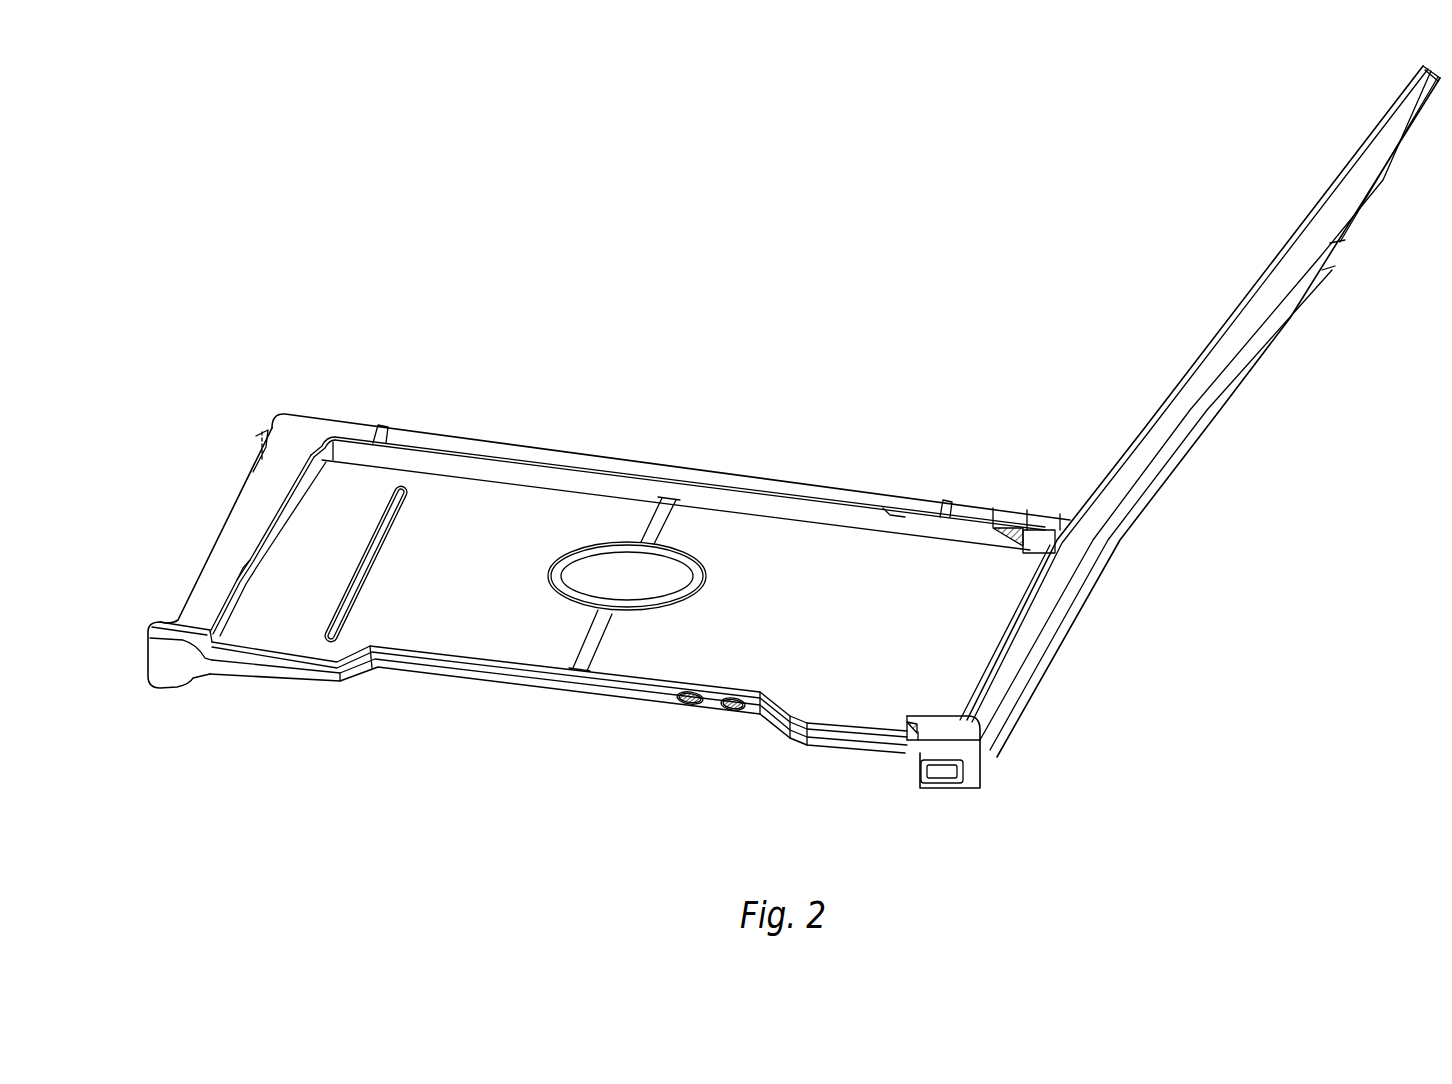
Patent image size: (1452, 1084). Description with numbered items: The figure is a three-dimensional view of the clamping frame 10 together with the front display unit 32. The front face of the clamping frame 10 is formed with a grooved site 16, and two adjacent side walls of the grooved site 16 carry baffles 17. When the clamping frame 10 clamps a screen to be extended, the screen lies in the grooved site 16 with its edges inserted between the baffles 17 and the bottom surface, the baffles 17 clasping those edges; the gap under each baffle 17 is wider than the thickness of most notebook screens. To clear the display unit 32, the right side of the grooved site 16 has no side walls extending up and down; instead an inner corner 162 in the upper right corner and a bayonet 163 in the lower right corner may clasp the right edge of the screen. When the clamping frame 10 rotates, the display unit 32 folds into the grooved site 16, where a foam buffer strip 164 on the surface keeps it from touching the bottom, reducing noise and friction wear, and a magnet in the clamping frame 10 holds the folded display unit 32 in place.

The clamping frame 10 is at (599, 586).
The grooved site 16 is at (572, 508).
The baffles 17 is at (303, 450).
The inner corner 162 is at (1000, 530).
The bayonet 163 is at (893, 735).
The foam buffer strip 164 is at (362, 602).
The display unit 32 is at (1215, 335).